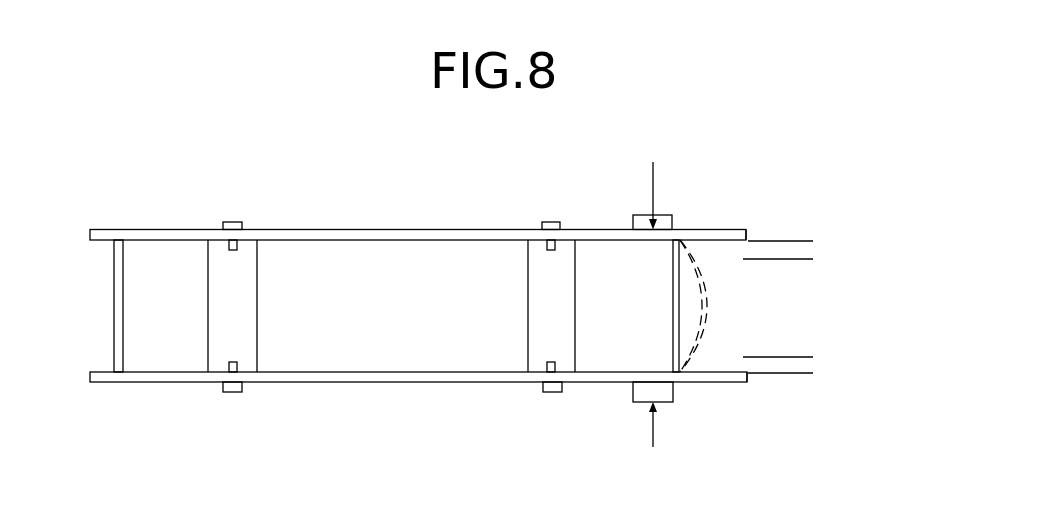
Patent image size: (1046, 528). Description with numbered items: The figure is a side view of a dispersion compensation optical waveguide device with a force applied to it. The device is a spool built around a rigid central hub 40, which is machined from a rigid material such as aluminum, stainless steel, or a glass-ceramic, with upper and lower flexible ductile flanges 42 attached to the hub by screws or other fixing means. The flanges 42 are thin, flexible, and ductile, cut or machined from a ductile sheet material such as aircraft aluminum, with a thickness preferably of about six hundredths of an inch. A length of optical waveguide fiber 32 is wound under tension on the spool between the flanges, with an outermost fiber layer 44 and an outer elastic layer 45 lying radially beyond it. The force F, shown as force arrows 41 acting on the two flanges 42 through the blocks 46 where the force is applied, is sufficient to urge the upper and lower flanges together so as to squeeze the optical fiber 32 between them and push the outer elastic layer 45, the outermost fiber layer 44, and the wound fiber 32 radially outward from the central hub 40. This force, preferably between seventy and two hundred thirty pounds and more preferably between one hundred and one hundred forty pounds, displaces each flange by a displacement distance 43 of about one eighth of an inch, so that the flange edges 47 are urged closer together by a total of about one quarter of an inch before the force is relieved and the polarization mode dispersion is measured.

The optical waveguide fiber 32 is at (184, 320).
The rigid central hub 40 is at (247, 320).
The force arrows 41 is at (656, 180).
The flexible ductile flanges 42 is at (611, 222).
The displacement distance 43 is at (836, 243).
The outermost fiber layer 44 is at (131, 264).
The outer elastic layer 45 is at (105, 307).
The load blocks 46 is at (664, 215).
The flange edges 47 is at (746, 238).